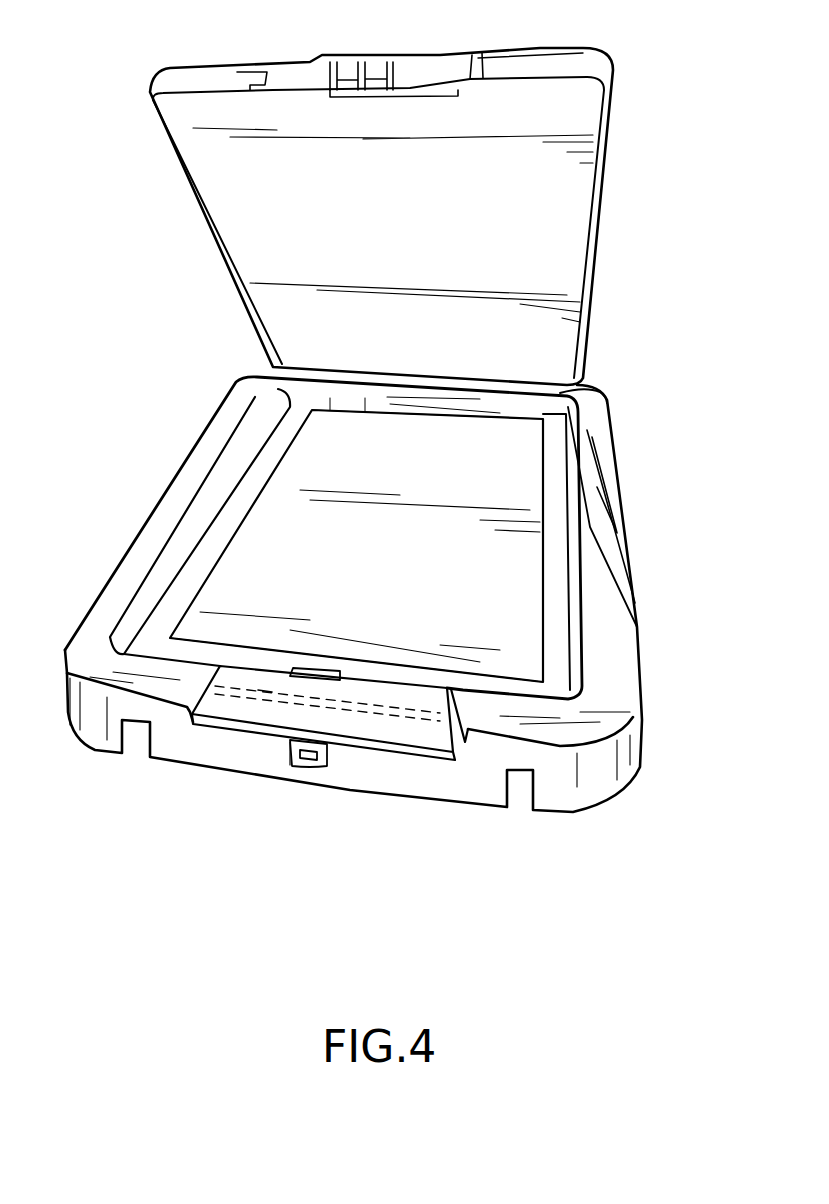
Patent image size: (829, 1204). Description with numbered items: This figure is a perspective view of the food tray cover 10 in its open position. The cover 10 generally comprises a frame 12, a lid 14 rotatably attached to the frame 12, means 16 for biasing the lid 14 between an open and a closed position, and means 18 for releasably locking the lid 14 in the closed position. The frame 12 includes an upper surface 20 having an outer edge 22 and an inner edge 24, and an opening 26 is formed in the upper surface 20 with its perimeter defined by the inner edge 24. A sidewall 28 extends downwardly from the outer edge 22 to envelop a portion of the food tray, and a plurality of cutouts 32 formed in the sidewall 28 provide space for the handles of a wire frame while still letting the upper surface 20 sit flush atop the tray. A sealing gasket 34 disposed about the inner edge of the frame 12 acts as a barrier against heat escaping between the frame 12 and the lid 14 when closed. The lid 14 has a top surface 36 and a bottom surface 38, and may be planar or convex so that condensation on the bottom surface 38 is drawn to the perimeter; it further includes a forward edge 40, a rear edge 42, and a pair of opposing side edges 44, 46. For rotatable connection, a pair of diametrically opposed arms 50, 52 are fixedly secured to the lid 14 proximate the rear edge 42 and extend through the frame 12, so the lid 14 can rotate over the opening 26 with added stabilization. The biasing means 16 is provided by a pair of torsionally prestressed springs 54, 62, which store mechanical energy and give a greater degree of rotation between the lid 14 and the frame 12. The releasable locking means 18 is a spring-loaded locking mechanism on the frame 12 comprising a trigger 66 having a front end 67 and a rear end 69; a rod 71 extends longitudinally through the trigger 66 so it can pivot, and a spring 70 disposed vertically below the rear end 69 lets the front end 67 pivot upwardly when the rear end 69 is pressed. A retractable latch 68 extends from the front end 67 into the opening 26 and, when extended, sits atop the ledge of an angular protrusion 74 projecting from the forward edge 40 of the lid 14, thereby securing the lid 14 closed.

The cover 10 is at (640, 297).
The frame 12 is at (615, 490).
The lid 14 is at (573, 70).
The means for biasing the lid 16 is at (500, 425).
The means for releasably locking the lid 18 is at (418, 735).
The upper surface 20 is at (615, 537).
The outer edge 22 is at (637, 585).
The inner edge 24 is at (577, 465).
The opening 26 is at (300, 508).
The sidewall 28 is at (625, 770).
The cutouts 32 is at (138, 752).
The sealing gasket 34 is at (190, 580).
The top surface 36 is at (513, 50).
The bottom surface 38 is at (605, 150).
The forward edge 40 is at (308, 73).
The rear edge 42 is at (410, 417).
The side edge 44 is at (188, 203).
The side edge 46 is at (603, 205).
The arm 50 is at (325, 410).
The arm 52 is at (520, 425).
The torsionally prestressed spring 54 is at (365, 412).
The spring 62 is at (480, 425).
The trigger 66 is at (250, 715).
The front end 67 is at (403, 690).
The retractable latch 68 is at (330, 668).
The rear end 69 is at (283, 730).
The spring 70 is at (320, 768).
The rod 71 is at (263, 690).
The angular protrusion 74 is at (366, 72).